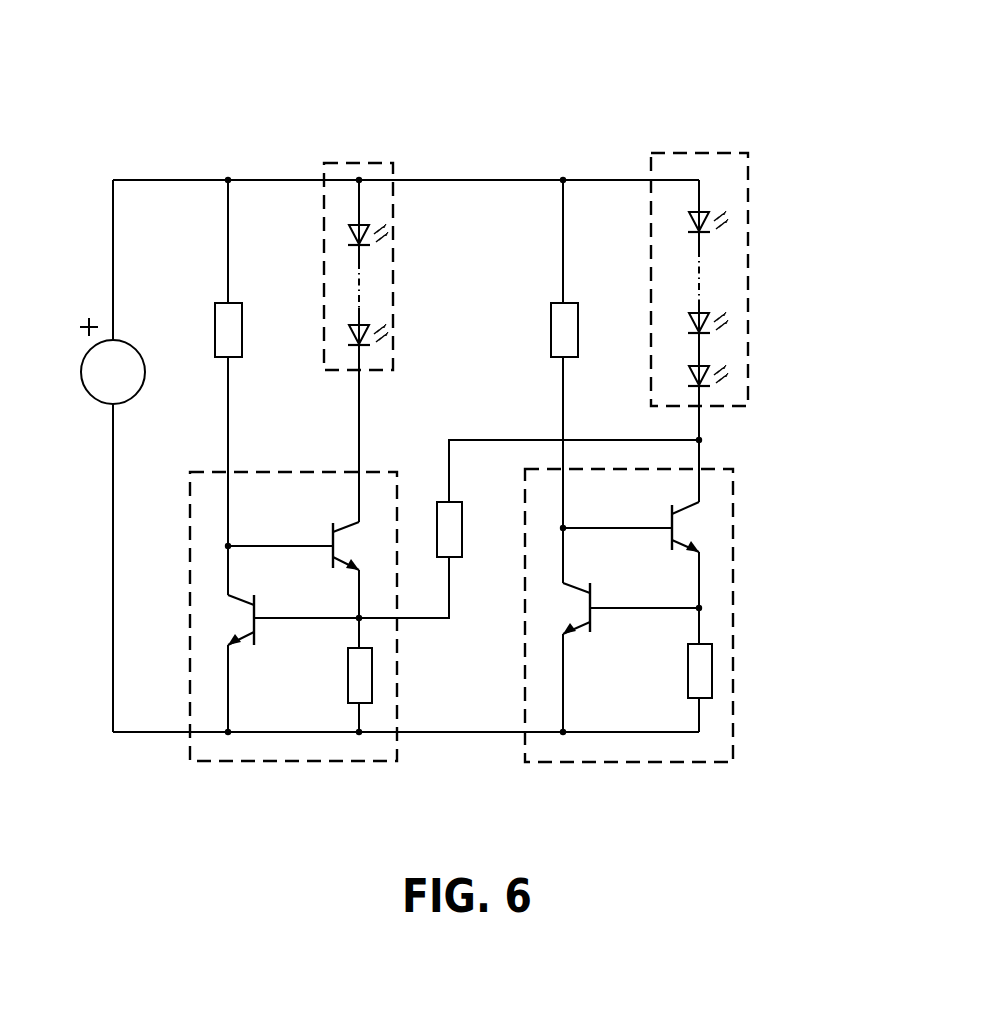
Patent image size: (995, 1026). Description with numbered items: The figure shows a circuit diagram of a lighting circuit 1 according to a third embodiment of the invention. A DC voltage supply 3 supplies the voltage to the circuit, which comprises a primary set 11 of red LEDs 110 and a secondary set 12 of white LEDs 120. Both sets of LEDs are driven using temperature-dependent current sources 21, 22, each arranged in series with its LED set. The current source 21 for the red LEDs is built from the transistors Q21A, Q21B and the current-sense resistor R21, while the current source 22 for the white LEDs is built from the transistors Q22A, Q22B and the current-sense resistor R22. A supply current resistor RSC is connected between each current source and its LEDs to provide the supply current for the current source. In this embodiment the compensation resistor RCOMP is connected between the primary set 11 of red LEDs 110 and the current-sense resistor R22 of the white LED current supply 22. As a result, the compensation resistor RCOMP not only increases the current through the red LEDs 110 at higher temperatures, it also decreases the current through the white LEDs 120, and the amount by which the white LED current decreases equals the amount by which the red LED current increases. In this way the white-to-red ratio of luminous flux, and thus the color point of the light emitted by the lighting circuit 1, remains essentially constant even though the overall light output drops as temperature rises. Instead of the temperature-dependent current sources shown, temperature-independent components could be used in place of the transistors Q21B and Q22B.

The lighting circuit 1 is at (774, 104).
The DC voltage supply 3 is at (90, 401).
The primary set of red LEDs 11 is at (709, 279).
The red LEDs 110 is at (697, 213).
The secondary set of white LEDs 12 is at (315, 231).
The white LEDs 120 is at (352, 226).
The current source 21 is at (629, 649).
The current source 22 is at (293, 651).
The supply current resistor RSC is at (551, 335).
The compensation resistor RCOMP is at (462, 532).
The transistor Q21A is at (692, 505).
The transistor Q21B is at (573, 587).
The transistor Q22A is at (356, 520).
The transistor Q22B is at (238, 590).
The current-sense resistor R21 is at (688, 676).
The current-sense resistor R22 is at (348, 676).